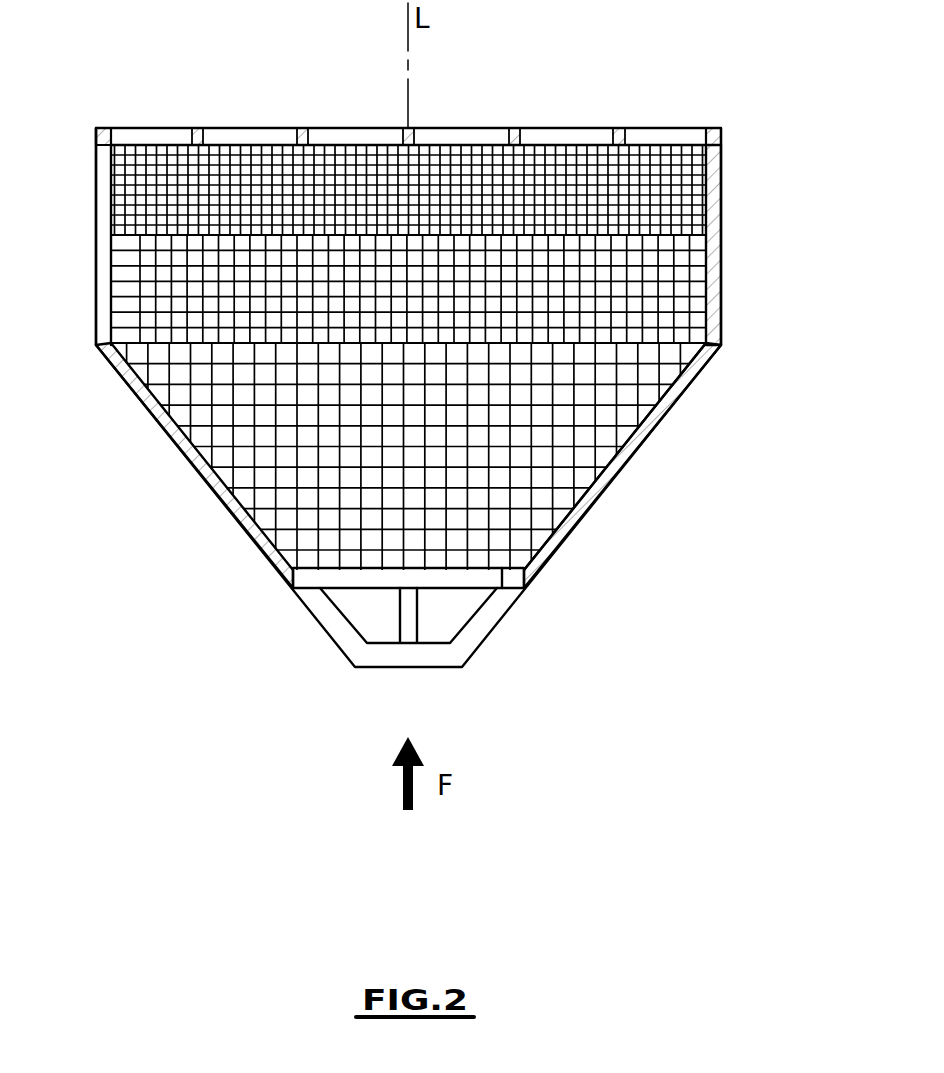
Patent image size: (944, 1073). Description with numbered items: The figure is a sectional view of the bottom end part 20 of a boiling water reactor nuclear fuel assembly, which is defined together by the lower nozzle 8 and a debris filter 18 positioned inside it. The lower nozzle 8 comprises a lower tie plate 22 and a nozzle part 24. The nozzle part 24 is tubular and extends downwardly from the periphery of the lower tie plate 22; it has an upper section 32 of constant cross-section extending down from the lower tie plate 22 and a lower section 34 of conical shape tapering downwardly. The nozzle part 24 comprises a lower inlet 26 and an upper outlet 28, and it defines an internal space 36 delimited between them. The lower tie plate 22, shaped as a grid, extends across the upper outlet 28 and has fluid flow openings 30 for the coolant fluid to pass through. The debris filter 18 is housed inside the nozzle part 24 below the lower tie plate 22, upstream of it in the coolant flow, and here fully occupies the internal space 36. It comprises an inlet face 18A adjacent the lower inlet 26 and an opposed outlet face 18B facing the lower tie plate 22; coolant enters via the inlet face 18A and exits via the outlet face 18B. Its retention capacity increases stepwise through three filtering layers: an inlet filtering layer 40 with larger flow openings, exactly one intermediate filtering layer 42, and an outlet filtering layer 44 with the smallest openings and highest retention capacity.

The lower nozzle 8 is at (748, 238).
The debris filter 18 is at (134, 292).
The inlet face 18A is at (500, 578).
The outlet face 18B is at (458, 189).
The bottom end part 20 is at (803, 184).
The lower tie plate 22 is at (723, 138).
The nozzle part 24 is at (668, 465).
The lower inlet 26 is at (322, 578).
The upper outlet 28 is at (690, 140).
The fluid flow openings 30 is at (568, 140).
The upper section 32 is at (777, 245).
The lower section 34 is at (623, 468).
The internal space 36 is at (650, 420).
The inlet filtering layer 40 is at (218, 452).
The intermediate filtering layer 42 is at (148, 322).
The outlet filtering layer 44 is at (128, 200).